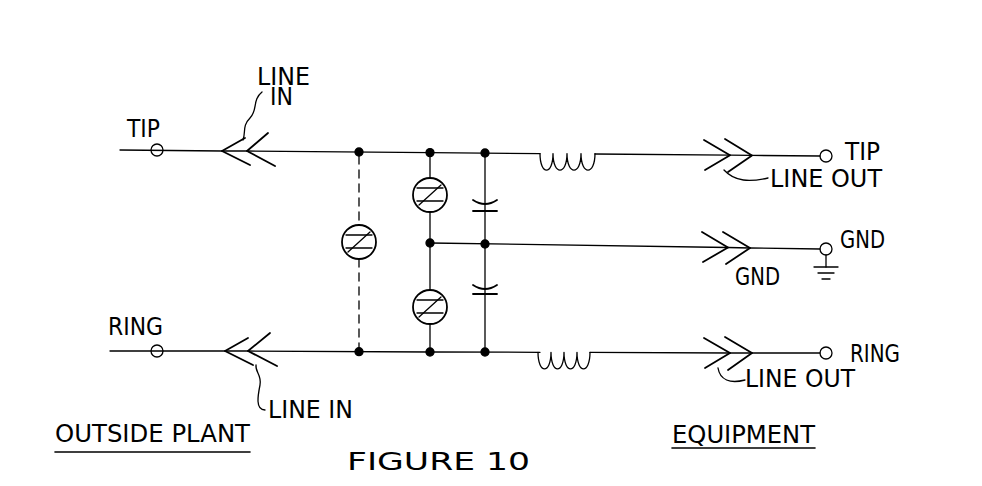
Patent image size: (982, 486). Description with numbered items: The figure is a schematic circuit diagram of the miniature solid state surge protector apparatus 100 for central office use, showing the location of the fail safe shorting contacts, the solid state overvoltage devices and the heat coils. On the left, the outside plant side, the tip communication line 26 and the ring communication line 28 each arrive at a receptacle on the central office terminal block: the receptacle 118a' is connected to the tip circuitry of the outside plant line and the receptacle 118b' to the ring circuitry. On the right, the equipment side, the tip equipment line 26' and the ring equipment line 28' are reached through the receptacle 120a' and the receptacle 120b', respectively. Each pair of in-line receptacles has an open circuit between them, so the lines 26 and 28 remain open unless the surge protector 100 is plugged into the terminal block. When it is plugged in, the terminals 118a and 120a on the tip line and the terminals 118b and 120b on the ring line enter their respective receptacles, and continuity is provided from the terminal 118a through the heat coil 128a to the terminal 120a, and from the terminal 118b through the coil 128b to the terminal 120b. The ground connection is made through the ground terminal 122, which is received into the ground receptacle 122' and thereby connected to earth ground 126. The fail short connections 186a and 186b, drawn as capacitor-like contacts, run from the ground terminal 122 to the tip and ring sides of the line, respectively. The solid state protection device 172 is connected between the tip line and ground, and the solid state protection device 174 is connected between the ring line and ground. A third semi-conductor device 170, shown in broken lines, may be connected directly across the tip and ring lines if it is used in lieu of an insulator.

The communication line 26 is at (257, 125).
The equipment line 26' is at (801, 135).
The communication line 28 is at (247, 329).
The equipment line 28' is at (811, 333).
The miniature solid state surge protector apparatus 100 is at (372, 96).
The terminal 118a is at (281, 138).
The receptacle 118a' is at (180, 113).
The terminal 118b is at (281, 364).
The receptacle 118b' is at (155, 372).
The terminal 120a is at (696, 129).
The receptacle 120a' is at (764, 130).
The terminal 120b is at (706, 338).
The receptacle 120b' is at (772, 339).
The ground terminal 122 is at (695, 231).
The ground receptacle 122' is at (753, 232).
The earth ground 126 is at (831, 256).
The heat coil 128a is at (555, 152).
The coil 128b is at (572, 372).
The third semi-conductor device 170 is at (341, 243).
The solid state protection device 172 is at (439, 194).
The solid state protection device 174 is at (437, 291).
The fail short connection 186a is at (499, 209).
The fail short connection 186b is at (499, 293).